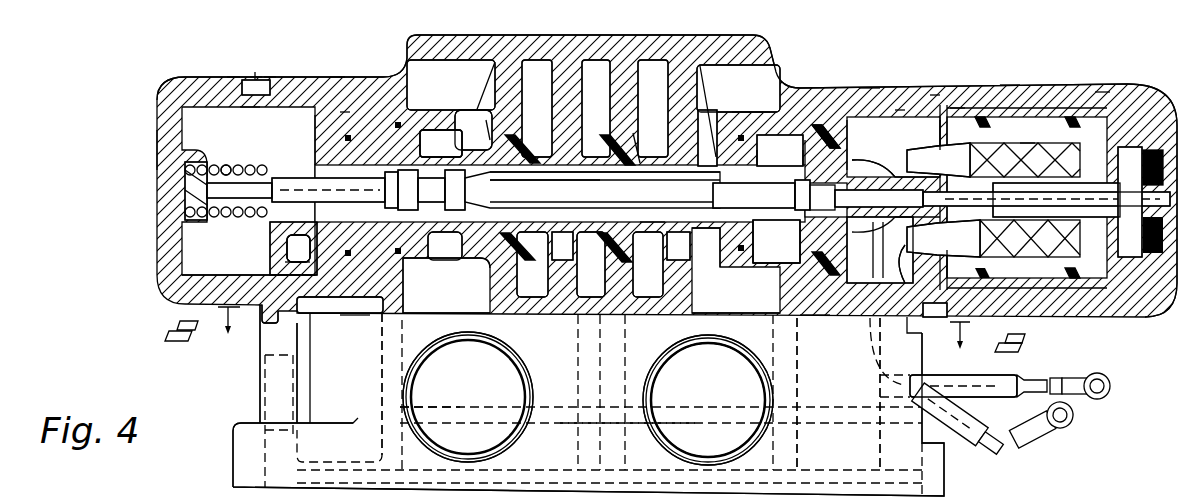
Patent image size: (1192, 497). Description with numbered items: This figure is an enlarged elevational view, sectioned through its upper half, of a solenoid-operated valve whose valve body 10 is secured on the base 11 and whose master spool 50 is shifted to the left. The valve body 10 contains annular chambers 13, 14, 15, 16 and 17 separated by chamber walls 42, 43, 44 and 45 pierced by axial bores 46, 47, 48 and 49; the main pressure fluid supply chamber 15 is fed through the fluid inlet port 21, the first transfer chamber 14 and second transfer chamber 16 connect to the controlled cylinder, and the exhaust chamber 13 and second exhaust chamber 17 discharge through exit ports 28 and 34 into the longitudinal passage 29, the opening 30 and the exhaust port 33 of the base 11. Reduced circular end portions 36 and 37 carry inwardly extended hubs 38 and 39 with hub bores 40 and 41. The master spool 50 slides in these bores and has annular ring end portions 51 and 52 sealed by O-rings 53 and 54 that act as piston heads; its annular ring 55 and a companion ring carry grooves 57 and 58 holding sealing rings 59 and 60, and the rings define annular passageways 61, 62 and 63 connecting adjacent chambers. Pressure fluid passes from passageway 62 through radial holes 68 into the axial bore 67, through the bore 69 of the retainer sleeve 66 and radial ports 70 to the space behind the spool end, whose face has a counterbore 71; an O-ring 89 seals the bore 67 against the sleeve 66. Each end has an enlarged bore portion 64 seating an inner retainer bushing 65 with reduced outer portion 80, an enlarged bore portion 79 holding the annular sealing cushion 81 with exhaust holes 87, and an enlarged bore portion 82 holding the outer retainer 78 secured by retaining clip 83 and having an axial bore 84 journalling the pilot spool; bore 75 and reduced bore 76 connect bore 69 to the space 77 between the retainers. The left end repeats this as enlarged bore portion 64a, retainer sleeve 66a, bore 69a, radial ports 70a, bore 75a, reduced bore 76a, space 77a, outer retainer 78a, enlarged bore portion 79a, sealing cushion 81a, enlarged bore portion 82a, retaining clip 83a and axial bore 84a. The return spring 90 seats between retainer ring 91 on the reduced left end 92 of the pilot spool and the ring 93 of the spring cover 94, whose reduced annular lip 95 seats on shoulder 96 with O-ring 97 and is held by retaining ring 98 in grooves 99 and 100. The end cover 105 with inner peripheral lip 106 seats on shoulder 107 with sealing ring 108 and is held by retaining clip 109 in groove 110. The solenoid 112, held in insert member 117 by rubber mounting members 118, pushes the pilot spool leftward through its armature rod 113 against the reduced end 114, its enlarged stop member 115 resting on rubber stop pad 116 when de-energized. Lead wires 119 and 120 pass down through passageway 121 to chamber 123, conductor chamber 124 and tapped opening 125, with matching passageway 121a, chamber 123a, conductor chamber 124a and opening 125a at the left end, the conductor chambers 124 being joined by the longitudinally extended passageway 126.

The valve body 10 is at (826, 86).
The base 11 is at (230, 452).
The exhaust chamber 13 is at (440, 62).
The first pressure fluid transfer chamber 14 is at (538, 62).
The main pressure fluid supply chamber 15 is at (597, 62).
The second transfer chamber 16 is at (652, 62).
The second exhaust chamber 17 is at (748, 68).
The fluid inlet port 21 is at (528, 372).
The exit port 28 is at (432, 312).
The longitudinal passage 29 is at (430, 405).
The opening 30 is at (632, 365).
The exhaust port 33 is at (740, 450).
The exit port 34 is at (705, 312).
The reduced circular end portion 36 is at (341, 84).
The reduced circular end portion 37 is at (868, 92).
The inwardly extended hub 38 is at (460, 112).
The inwardly extended hub 39 is at (757, 124).
The hub bore 40 is at (462, 258).
The hub bore 41 is at (766, 140).
The chamber wall 42 is at (519, 279).
The chamber wall 43 is at (580, 281).
The chamber wall 44 is at (636, 280).
The chamber wall 45 is at (702, 275).
The axial bore 46 is at (522, 140).
The axial bore 47 is at (580, 140).
The axial bore 48 is at (638, 140).
The axial bore 49 is at (706, 140).
The master spool 50 is at (652, 218).
The annular ring end portion 51 is at (428, 138).
The annular ring end portion 52 is at (757, 156).
The O-ring sealing member 53 is at (422, 130).
The O-ring sealing member 54 is at (740, 128).
The annular ring 55 is at (488, 130).
The groove 57 is at (514, 177).
The groove 58 is at (608, 177).
The annular sealing ring 59 is at (518, 250).
The annular sealing ring 60 is at (608, 246).
The annular passageway 61 is at (452, 235).
The annular passageway 62 is at (548, 181).
The annular passageway 63 is at (668, 242).
The enlarged bore portion 64 is at (781, 254).
The enlarged bore portion 64a is at (408, 290).
The inner retainer bushing 65 is at (806, 160).
The retainer sleeve 66 is at (756, 232).
The retainer sleeve 66a is at (440, 178).
The axial bore 67 is at (676, 177).
The radial holes 68 is at (562, 242).
The bore 69 is at (770, 188).
The bore 69a is at (472, 190).
The radial ports 70 is at (778, 236).
The radial ports 70a is at (416, 182).
The counterbore 71 is at (795, 195).
The bore 75 is at (864, 193).
The bore 75a is at (385, 185).
The reduced bore 76 is at (876, 217).
The reduced bore 76a is at (332, 178).
The space 77 is at (878, 176).
The space 77a is at (318, 246).
The outer annular retainer 78 is at (868, 135).
The outer annular retainer 78a is at (318, 128).
The enlarged bore portion 79 is at (823, 126).
The enlarged bore portion 79a is at (305, 268).
The reduced outer portion 80 is at (810, 158).
The annular sealing cushion 81 is at (816, 128).
The annular sealing cushion 81a is at (357, 318).
The enlarged bore portion 82 is at (900, 110).
The enlarged bore portion 82a is at (346, 112).
The retaining clip 83 is at (868, 152).
The retaining clip 83a is at (314, 153).
The axial bore 84 is at (905, 178).
The axial bore 84a is at (280, 224).
The holes 87 is at (830, 222).
The O-ring 89 is at (753, 250).
The return spring 90 is at (228, 217).
The retainer ring 91 is at (265, 182).
The reduced left end 92 is at (226, 165).
The ring 93 is at (200, 160).
The spring cover 94 is at (154, 150).
The reduced annular lip 95 is at (268, 73).
The reduced shoulder 96 is at (247, 108).
The O-ring 97 is at (232, 75).
The retaining ring 98 is at (255, 72).
The groove 99 is at (258, 93).
The groove 100 is at (262, 316).
The end cover 105 is at (1010, 82).
The inner peripheral lip 106 is at (935, 95).
The reduced shoulder 107 is at (940, 134).
The sealing ring 108 is at (955, 102).
The retaining clip 109 is at (930, 322).
The groove 110 is at (948, 262).
The solenoid 112 is at (1030, 140).
The armature rod 113 is at (1060, 217).
The reduced end 114 is at (985, 196).
The enlarged stop member 115 is at (1133, 139).
The rubber stop pad 116 is at (1143, 160).
The insert member 117 is at (1100, 92).
The rubber solenoid mounting members 118 is at (983, 126).
The lead wire 119 is at (925, 158).
The lead wire 120 is at (905, 250).
The passageway 121 is at (900, 268).
The passageway 121a is at (286, 250).
The chamber 123 is at (812, 318).
The chamber 123a is at (318, 297).
The conductor chamber 124 is at (805, 385).
The conductor chamber 124a is at (378, 386).
The opening 125 is at (918, 373).
The opening 125a is at (260, 372).
The longitudinally extended passageway 126 is at (565, 428).